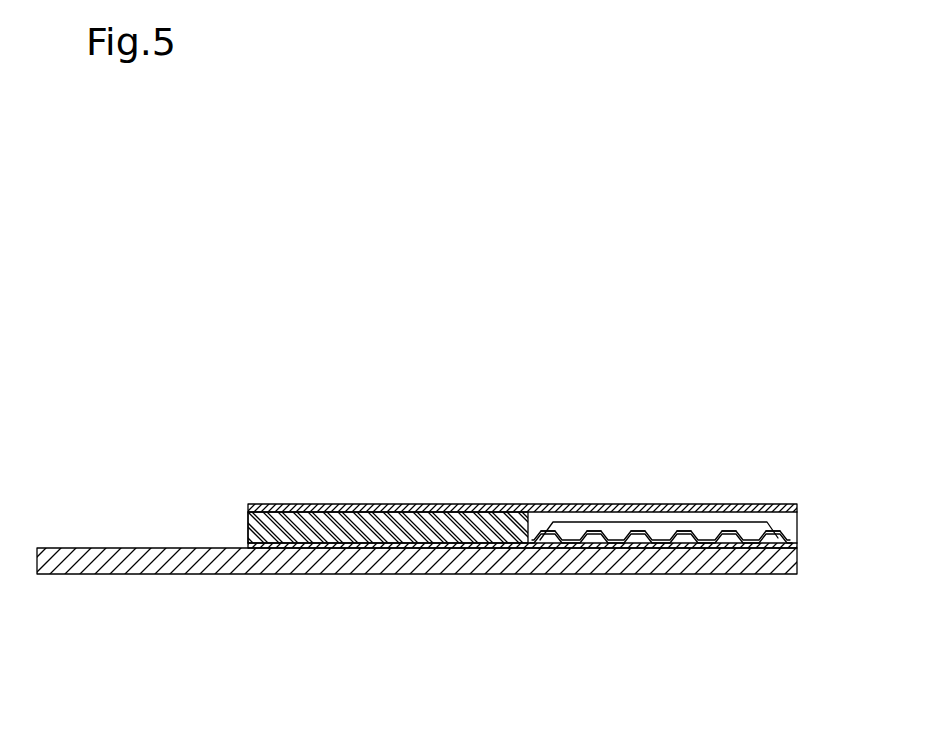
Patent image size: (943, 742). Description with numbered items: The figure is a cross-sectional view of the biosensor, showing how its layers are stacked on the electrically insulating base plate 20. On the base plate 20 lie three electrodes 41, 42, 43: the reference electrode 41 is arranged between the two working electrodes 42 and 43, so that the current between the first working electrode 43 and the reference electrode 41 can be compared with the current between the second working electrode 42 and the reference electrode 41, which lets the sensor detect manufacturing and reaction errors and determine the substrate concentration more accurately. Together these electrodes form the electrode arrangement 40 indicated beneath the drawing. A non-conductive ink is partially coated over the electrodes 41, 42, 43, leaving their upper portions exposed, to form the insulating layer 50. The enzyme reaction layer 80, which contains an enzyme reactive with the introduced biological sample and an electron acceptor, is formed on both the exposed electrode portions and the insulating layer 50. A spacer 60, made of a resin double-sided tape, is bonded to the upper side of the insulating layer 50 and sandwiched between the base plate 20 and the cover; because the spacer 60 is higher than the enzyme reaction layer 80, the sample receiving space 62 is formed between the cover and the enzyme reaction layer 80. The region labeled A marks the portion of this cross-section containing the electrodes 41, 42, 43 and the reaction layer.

The base plate 20 is at (338, 573).
The electrode structure 40 is at (661, 608).
The reference electrode 41 is at (668, 543).
The second working electrode 42 is at (582, 543).
The first working electrode 43 is at (725, 545).
The insulating layer 50 is at (505, 545).
The spacer 60 is at (300, 515).
The sample receiving space 62 is at (795, 517).
The enzyme reaction layer 80 is at (706, 530).
The region A is at (806, 540).